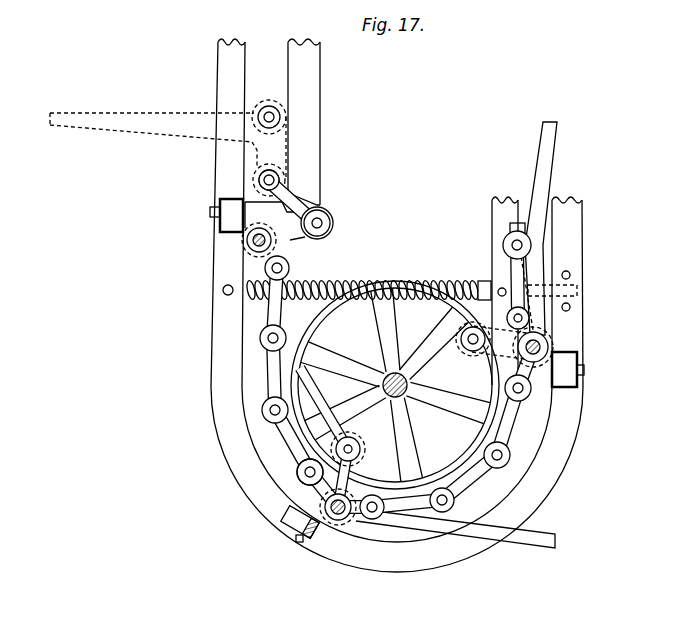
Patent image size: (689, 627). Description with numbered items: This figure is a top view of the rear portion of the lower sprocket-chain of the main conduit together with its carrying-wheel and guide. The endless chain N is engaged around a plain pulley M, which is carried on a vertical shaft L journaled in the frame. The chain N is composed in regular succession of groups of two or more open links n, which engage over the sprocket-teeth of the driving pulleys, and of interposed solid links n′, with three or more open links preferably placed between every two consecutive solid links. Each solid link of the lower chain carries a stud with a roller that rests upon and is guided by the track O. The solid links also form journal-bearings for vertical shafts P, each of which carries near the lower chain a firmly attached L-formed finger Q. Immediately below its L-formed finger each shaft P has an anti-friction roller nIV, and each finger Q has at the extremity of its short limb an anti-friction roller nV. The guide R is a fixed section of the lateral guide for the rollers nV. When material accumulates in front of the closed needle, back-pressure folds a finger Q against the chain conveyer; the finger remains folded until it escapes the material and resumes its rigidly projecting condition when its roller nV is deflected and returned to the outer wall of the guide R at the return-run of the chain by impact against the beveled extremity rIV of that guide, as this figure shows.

The track O is at (397, 296).
The fixed section of lateral guide R is at (500, 212).
The L-formed finger Q is at (433, 577).
The plain pulley M is at (395, 385).
The vertical shaft L is at (395, 375).
The endless chain N is at (507, 418).
The open link n is at (477, 475).
The solid link n′ is at (303, 492).
The anti-friction roller nIV is at (259, 240).
The anti-friction roller nV is at (317, 221).
The beveled extremity rIV is at (297, 205).
The vertical shaft P is at (338, 513).